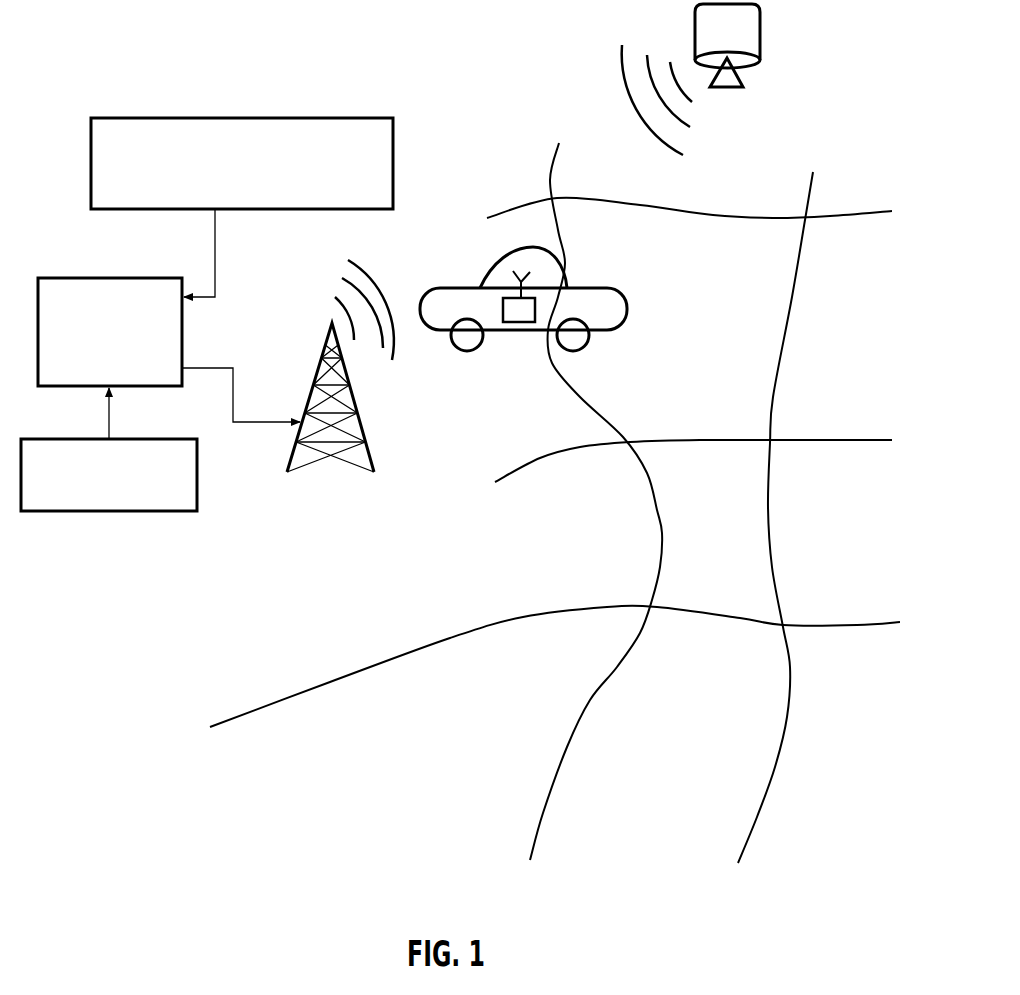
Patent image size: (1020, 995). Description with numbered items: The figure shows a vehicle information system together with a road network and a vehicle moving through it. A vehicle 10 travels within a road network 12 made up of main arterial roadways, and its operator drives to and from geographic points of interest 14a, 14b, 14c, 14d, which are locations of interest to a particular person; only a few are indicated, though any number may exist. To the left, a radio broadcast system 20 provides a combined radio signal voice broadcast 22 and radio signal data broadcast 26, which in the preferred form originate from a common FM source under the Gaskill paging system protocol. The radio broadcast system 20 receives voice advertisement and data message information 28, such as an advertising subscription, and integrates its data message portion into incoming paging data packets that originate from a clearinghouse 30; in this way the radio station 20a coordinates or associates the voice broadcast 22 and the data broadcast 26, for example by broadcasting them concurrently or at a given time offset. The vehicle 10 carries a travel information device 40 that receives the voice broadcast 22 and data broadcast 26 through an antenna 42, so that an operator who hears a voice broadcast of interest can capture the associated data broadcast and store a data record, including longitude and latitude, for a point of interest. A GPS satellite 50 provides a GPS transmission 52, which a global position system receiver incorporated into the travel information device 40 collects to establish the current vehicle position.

The vehicle 10 is at (553, 315).
The road network 12 is at (555, 503).
The geographic point of interest 14a is at (773, 470).
The geographic point of interest 14b is at (616, 678).
The geographic point of interest 14c is at (759, 214).
The geographic point of interest 14d is at (352, 664).
The radio broadcast system 20 is at (49, 216).
The radio station 20a is at (143, 287).
The voice broadcast 22 is at (365, 265).
The data broadcast 26 is at (378, 342).
The voice advertisement and data message information 28 is at (365, 127).
The clearinghouse 30 is at (170, 502).
The travel information device 40 is at (523, 313).
The antenna 42 is at (535, 275).
The GPS satellite 50 is at (755, 43).
The GPS transmission 52 is at (650, 142).